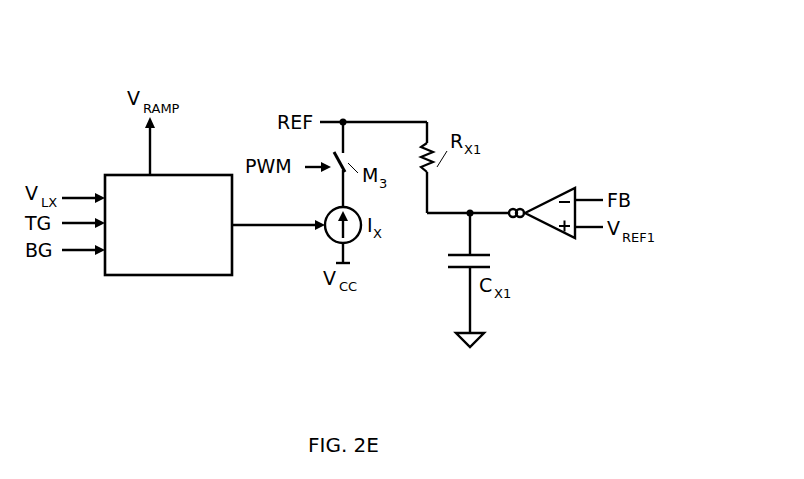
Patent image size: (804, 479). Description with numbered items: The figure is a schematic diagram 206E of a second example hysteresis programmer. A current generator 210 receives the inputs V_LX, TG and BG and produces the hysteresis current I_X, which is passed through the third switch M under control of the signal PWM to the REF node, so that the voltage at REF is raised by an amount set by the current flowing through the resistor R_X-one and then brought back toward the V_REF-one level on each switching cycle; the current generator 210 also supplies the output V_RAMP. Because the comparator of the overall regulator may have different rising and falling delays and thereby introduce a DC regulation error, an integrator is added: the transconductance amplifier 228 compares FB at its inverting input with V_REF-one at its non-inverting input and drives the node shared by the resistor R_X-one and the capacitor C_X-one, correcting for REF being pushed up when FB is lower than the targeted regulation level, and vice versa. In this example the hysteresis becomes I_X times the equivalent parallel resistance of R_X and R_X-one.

The schematic diagram of a second example hysteresis programmer 206E is at (641, 32).
The current generator 210 is at (152, 262).
The transconductance amplifier 228 is at (562, 181).